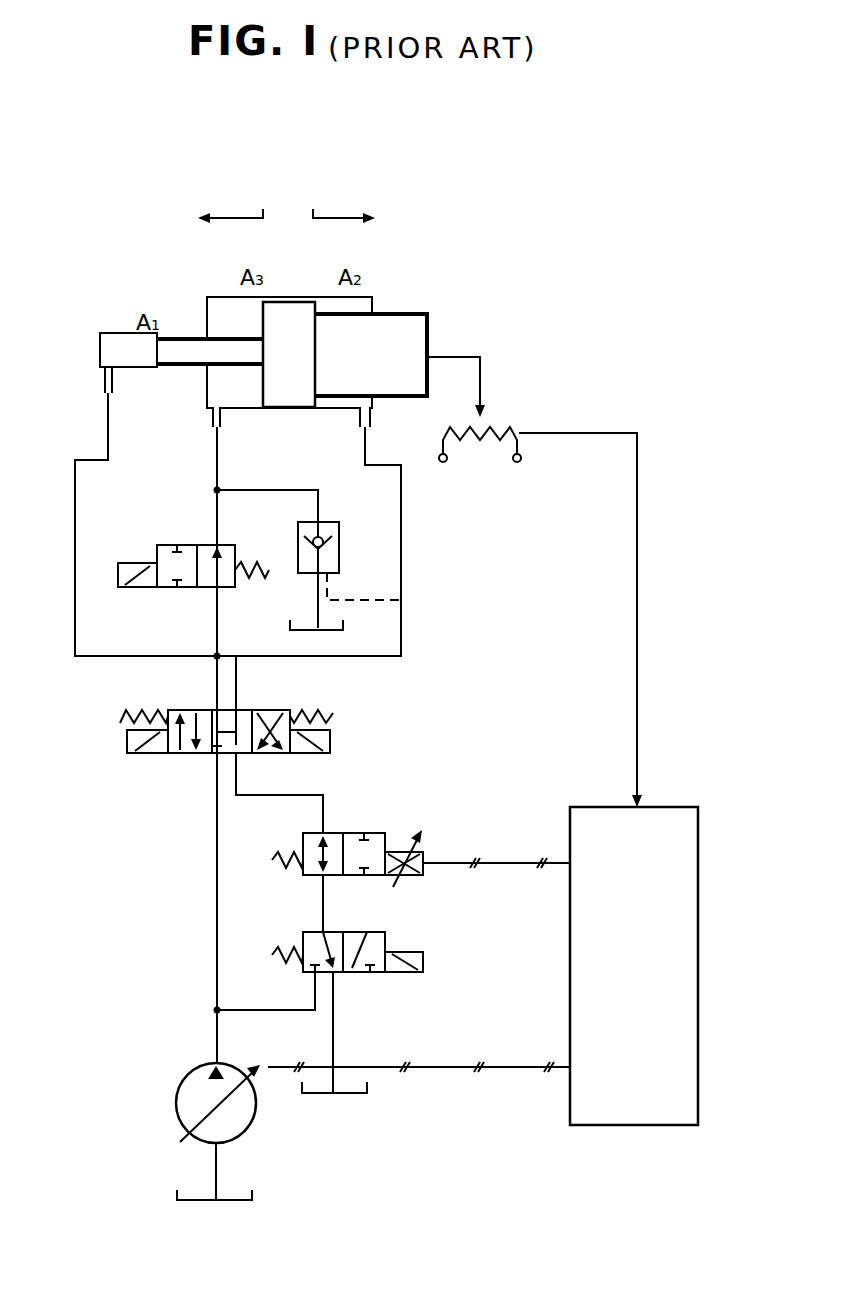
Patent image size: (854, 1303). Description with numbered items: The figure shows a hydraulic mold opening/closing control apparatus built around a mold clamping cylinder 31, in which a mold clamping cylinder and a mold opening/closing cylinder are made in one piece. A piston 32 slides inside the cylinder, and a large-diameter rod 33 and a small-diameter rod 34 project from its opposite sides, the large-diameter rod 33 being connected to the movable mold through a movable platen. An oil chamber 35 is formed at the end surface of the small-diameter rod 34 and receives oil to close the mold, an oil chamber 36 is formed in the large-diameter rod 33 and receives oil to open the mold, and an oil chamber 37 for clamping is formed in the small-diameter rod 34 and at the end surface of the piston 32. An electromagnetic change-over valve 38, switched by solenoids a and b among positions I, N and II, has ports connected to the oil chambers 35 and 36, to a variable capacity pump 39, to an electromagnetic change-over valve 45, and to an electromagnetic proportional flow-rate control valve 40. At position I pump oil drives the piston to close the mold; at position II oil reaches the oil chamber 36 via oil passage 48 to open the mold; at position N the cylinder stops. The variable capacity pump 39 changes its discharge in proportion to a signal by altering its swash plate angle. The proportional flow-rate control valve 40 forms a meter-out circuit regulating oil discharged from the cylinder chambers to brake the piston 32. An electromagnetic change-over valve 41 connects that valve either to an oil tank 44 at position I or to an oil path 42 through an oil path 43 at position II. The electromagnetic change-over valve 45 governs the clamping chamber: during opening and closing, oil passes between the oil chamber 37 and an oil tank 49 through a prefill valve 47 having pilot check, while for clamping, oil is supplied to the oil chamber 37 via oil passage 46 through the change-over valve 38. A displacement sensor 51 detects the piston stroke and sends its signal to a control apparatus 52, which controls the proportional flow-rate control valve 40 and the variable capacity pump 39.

The mold clamping cylinder 31 is at (291, 262).
The piston 32 is at (303, 366).
The large-diameter rod 33 is at (428, 333).
The small-diameter rod 34 is at (183, 336).
The oil chamber 35 is at (122, 343).
The oil chamber 36 is at (348, 402).
The oil chamber 37 is at (220, 388).
The electromagnetic change-over valve 38 is at (122, 716).
The variable capacity pump 39 is at (180, 1082).
The electromagnetic proportional flow-rate control valve 40 is at (372, 833).
The electromagnetic change-over valve 41 is at (372, 975).
The oil path 42 is at (215, 900).
The oil path 43 is at (257, 1013).
The oil tank 44 is at (352, 1094).
The electromagnetic change-over valve 45 is at (236, 545).
The oil passage 46 is at (215, 463).
The prefill valve 47 is at (340, 558).
The oil passage 48 is at (402, 630).
The oil tank 49 is at (332, 632).
The displacement sensor 51 is at (495, 430).
The control apparatus 52 is at (668, 805).